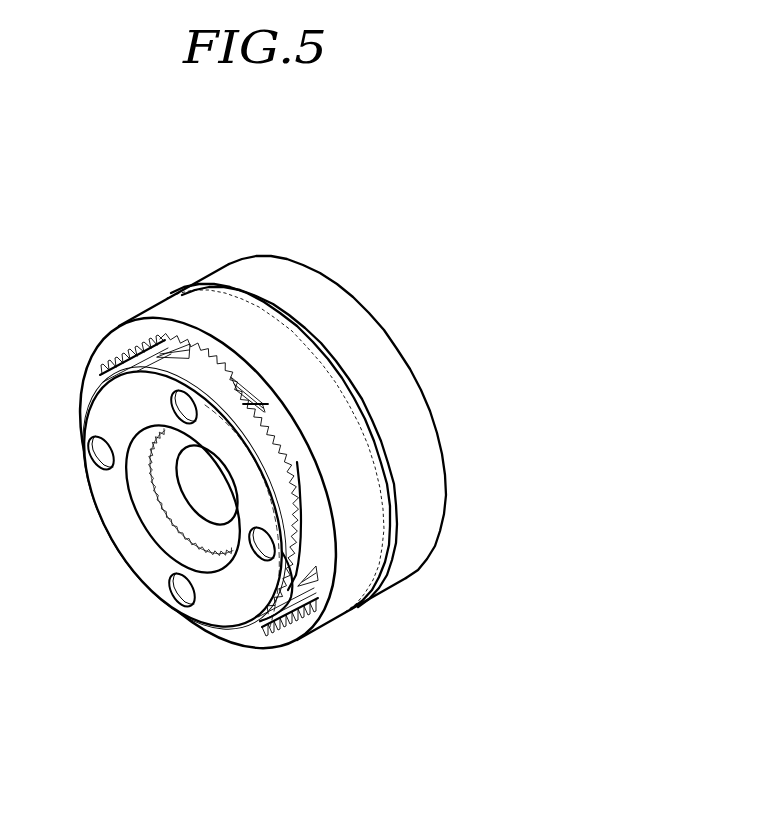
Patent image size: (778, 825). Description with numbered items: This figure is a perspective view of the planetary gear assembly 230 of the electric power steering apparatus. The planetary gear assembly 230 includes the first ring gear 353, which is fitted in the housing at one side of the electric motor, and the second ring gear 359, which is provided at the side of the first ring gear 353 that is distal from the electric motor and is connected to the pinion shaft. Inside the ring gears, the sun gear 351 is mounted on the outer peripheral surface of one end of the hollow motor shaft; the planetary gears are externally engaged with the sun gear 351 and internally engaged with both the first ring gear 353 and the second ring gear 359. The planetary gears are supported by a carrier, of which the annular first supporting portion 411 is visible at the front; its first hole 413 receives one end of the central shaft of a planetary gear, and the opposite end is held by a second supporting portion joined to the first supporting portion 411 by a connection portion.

The planetary gear assembly 230 is at (448, 215).
The sun gear 351 is at (187, 512).
The first ring gear 353 is at (337, 612).
The second ring gear 359 is at (403, 573).
The first supporting portion 411 is at (219, 618).
The first hole 413 is at (185, 609).